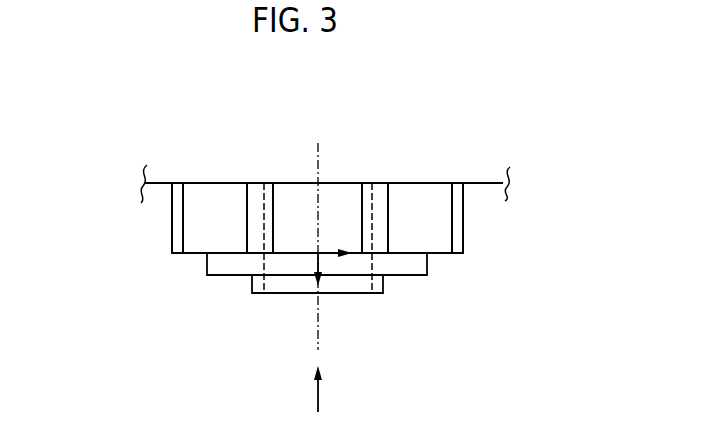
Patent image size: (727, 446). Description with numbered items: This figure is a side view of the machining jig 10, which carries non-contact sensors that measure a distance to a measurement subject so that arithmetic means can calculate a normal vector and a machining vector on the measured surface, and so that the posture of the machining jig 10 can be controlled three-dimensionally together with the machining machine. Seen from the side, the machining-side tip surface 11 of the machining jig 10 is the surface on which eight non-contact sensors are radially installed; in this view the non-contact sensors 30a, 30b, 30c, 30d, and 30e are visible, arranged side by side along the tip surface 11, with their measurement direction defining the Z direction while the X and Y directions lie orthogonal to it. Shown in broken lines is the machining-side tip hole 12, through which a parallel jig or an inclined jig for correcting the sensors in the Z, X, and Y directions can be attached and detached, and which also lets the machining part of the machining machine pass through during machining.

The machining jig 10 is at (178, 145).
The machining-side tip surface 11 is at (165, 187).
The machining-side tip hole 12 is at (370, 225).
The non-contact sensor 30a is at (170, 233).
The non-contact sensor 30b is at (212, 235).
The non-contact sensor 30c is at (297, 237).
The non-contact sensor 30d is at (433, 233).
The non-contact sensor 30e is at (463, 228).